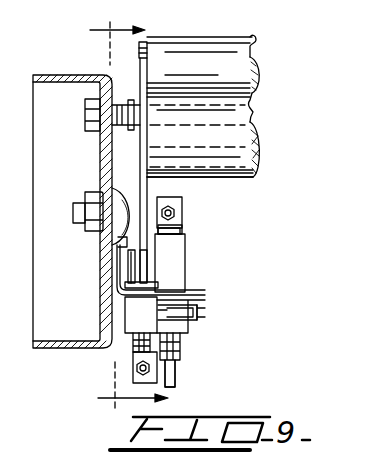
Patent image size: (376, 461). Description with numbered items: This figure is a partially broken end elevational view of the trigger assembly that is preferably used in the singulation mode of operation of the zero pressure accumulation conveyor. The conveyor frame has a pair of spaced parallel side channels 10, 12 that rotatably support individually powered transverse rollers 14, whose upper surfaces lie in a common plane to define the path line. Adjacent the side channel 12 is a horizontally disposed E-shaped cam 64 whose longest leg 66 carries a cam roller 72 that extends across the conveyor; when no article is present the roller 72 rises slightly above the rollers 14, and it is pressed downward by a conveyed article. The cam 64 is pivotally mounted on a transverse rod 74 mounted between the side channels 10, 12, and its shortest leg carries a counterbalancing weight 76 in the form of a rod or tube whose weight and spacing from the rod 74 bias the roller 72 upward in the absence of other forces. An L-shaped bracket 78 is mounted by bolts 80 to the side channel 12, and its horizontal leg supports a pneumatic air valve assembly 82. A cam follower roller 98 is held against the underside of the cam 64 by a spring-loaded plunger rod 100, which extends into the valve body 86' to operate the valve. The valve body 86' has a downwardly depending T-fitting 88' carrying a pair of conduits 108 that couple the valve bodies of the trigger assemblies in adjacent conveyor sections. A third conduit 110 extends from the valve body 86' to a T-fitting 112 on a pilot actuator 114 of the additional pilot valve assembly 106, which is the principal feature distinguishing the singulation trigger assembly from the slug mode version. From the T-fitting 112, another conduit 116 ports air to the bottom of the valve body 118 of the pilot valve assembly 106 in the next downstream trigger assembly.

The side channel 10 is at (109, 224).
The side channel 12 is at (48, 338).
The transverse roller 14 is at (253, 176).
The E-shaped cam 64 is at (242, 158).
The leg 66 is at (137, 48).
The cam roller 72 is at (252, 38).
The rod 74 is at (252, 110).
The counterbalancing weight 76 is at (258, 148).
The L-shaped bracket 78 is at (124, 247).
The bolt 80 is at (73, 214).
The pneumatic air valve assembly 82 is at (222, 325).
The valve body 86' is at (127, 341).
The T-fitting 88' is at (117, 372).
The roller 98 is at (140, 266).
The plunger rod 100 is at (130, 278).
The pilot valve assembly 106 is at (200, 247).
The conduit 108 is at (157, 372).
The third conduit 110 is at (180, 212).
The T-fitting 112 is at (176, 200).
The pilot actuator 114 is at (190, 240).
The conduit 116 is at (180, 365).
The valve body 118 is at (178, 318).